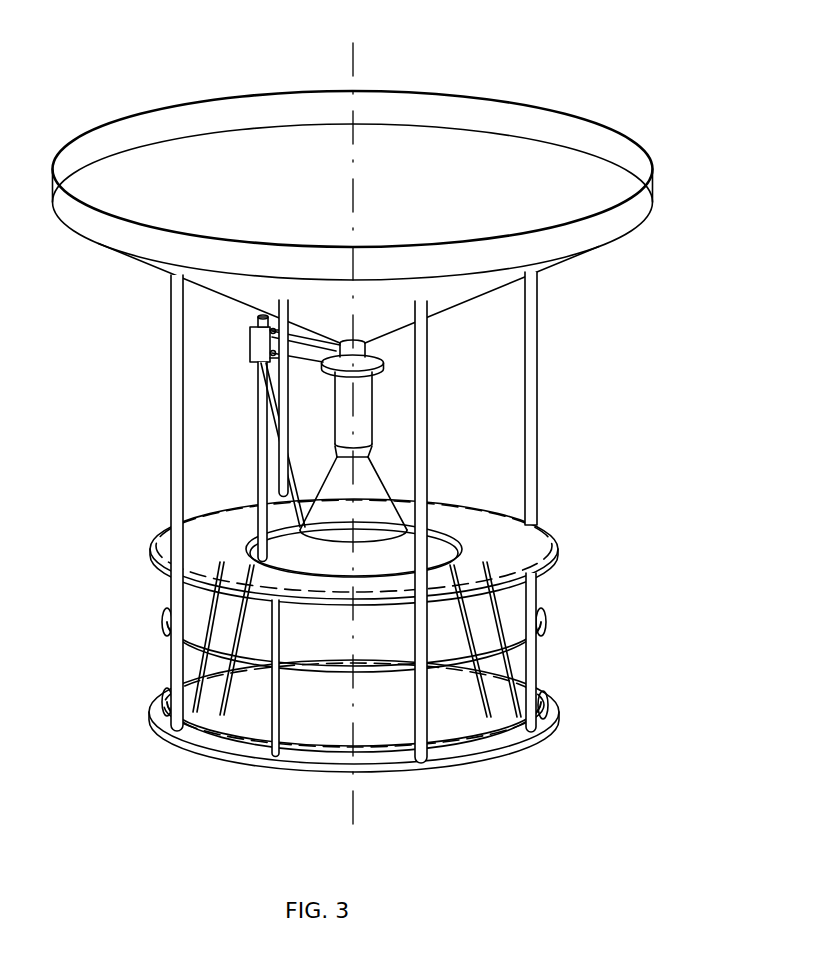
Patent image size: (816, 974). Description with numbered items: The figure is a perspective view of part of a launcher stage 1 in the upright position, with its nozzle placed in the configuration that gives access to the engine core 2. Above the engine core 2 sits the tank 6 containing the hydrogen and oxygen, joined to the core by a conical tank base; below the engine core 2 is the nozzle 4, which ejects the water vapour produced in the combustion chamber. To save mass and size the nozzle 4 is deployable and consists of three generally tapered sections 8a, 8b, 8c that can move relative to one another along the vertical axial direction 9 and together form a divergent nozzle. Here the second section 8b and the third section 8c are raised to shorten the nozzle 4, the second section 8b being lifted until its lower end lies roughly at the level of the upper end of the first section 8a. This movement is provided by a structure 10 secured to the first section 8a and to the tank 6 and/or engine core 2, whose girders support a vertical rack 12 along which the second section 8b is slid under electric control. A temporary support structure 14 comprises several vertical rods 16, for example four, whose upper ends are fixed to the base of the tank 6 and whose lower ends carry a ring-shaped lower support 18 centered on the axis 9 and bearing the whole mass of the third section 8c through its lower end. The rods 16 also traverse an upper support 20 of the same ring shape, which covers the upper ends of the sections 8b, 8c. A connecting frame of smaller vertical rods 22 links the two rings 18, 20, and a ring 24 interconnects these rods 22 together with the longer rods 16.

The launcher stage 1 is at (525, 90).
The engine core 2 is at (398, 427).
The nozzle 4 is at (358, 657).
The tank 6 is at (638, 203).
The first section 8a is at (417, 548).
The second section 8b is at (553, 540).
The third section 8c is at (483, 733).
The axial direction 9 is at (356, 815).
The structure 10 is at (248, 383).
The vertical rack 12 is at (263, 425).
The temporary support structure 14 is at (146, 338).
The vertical rods 16 is at (172, 298).
The ring-shaped lower support 18 is at (152, 712).
The upper support 20 is at (152, 542).
The smaller vertical rods 22 is at (265, 627).
The ring 24 is at (470, 660).